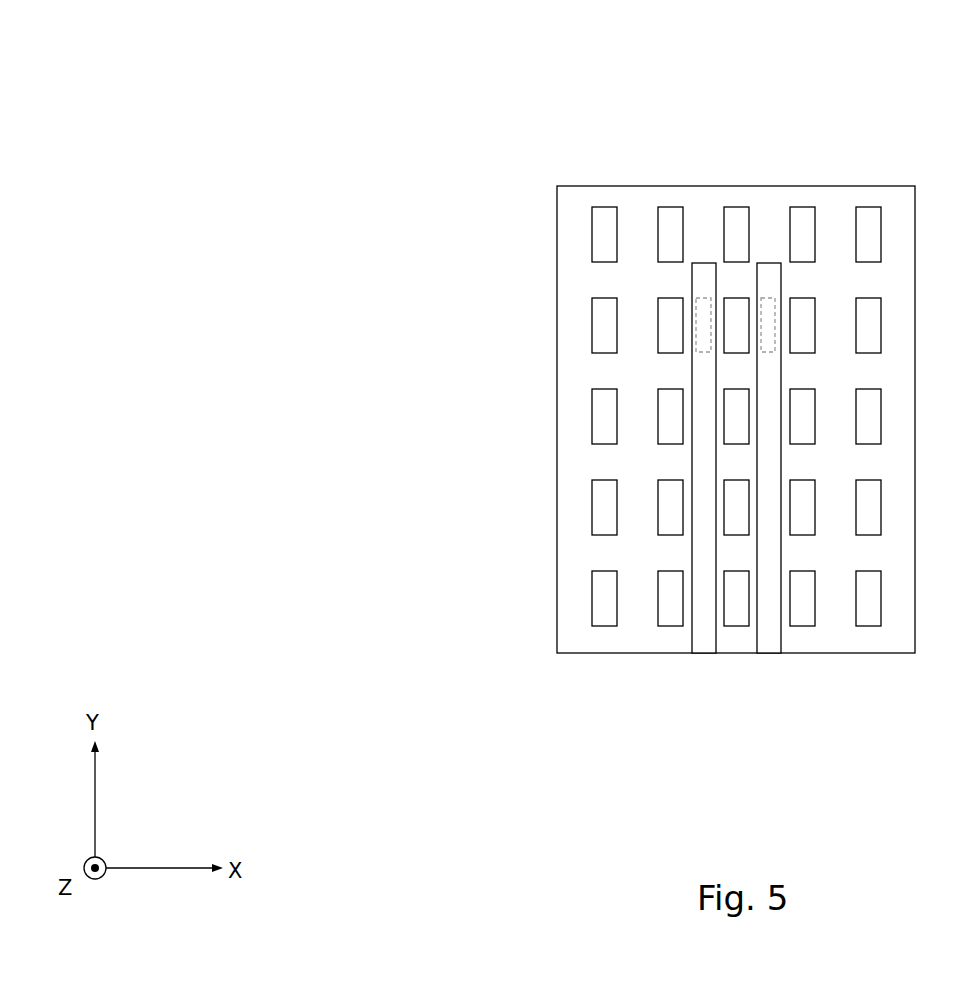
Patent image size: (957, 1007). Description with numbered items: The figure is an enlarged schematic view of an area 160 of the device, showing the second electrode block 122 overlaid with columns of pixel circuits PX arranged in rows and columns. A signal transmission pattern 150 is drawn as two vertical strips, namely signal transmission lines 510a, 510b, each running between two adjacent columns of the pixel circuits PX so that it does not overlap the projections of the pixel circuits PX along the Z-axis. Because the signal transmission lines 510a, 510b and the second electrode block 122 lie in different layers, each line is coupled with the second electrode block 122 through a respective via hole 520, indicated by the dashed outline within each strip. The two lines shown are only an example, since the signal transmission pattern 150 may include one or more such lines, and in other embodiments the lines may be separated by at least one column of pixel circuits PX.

The area 160 is at (266, 88).
The second electrode block 122 is at (570, 420).
The pixel circuits PX is at (730, 207).
The signal transmission pattern 150 is at (812, 763).
The signal transmission line 510a is at (702, 648).
The signal transmission line 510b is at (767, 648).
The via holes 520 is at (707, 350).